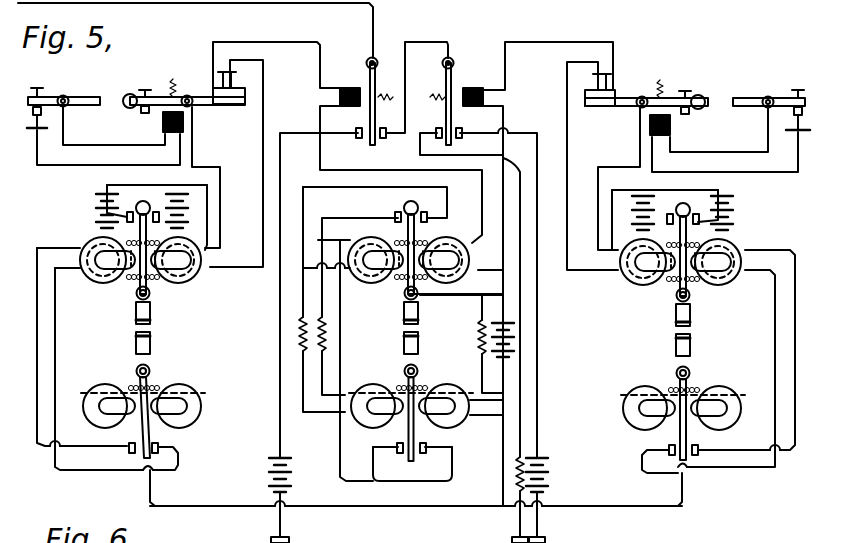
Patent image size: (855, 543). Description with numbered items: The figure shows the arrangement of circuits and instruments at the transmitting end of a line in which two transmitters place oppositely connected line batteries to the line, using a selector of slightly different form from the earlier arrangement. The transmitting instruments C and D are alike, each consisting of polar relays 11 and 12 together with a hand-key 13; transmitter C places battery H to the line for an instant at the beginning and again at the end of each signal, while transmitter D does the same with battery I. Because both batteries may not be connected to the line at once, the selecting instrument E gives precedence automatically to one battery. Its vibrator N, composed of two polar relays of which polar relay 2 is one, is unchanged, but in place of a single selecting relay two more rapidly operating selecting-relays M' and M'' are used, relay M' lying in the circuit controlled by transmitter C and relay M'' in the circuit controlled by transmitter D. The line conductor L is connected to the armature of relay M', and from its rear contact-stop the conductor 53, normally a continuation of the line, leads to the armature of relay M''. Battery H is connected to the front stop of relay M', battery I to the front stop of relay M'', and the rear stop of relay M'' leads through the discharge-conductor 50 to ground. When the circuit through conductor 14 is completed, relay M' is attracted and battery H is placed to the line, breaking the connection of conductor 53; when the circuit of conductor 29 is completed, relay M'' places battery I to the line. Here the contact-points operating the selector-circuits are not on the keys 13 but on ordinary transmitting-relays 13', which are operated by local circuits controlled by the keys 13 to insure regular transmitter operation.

The line conductor L is at (376, 17).
The hand-key 13 is at (418, 126).
The transmitting-relay 13' is at (415, 161).
The conductor 14 is at (276, 65).
The conductor 53 is at (423, 78).
The conductor 29 is at (548, 66).
The selecting-relay M' is at (401, 148).
The selecting-relay M'' is at (470, 279).
The line battery H is at (295, 338).
The line battery I is at (511, 335).
The discharge-conductor 50 is at (521, 383).
The selecting instrument E is at (406, 334).
The vibrator N is at (426, 404).
The polar relay 2 is at (411, 413).
The transmitting instrument C is at (122, 345).
The transmitting instrument D is at (703, 348).
The polar relay 11 is at (410, 278).
The polar relay 12 is at (413, 410).